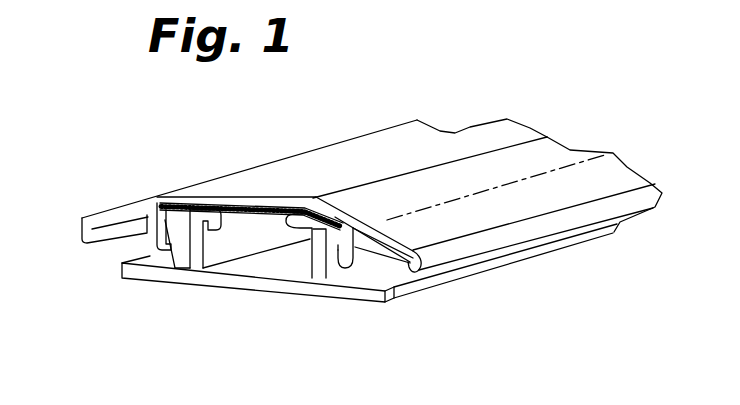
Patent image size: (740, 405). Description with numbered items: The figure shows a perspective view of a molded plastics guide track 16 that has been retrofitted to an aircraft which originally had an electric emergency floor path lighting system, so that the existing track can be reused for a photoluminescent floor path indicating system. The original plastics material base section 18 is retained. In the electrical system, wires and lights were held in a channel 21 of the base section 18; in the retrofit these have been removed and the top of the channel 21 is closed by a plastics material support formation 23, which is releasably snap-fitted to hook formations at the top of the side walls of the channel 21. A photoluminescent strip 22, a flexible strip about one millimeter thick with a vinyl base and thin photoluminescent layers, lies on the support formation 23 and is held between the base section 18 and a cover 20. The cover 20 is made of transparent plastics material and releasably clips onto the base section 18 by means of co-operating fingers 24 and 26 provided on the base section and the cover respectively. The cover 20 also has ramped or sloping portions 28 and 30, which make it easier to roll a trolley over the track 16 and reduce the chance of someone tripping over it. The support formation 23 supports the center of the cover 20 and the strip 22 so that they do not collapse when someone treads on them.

The track 16 is at (480, 122).
The base section 18 is at (290, 284).
The cover 20 is at (476, 216).
The channel 21 is at (262, 258).
The photoluminescent strip 22 is at (178, 201).
The support formation 23 is at (237, 213).
The finger 24 is at (333, 236).
The finger 26 is at (348, 226).
The sloping portion 28 is at (336, 207).
The sloping portion 30 is at (111, 213).